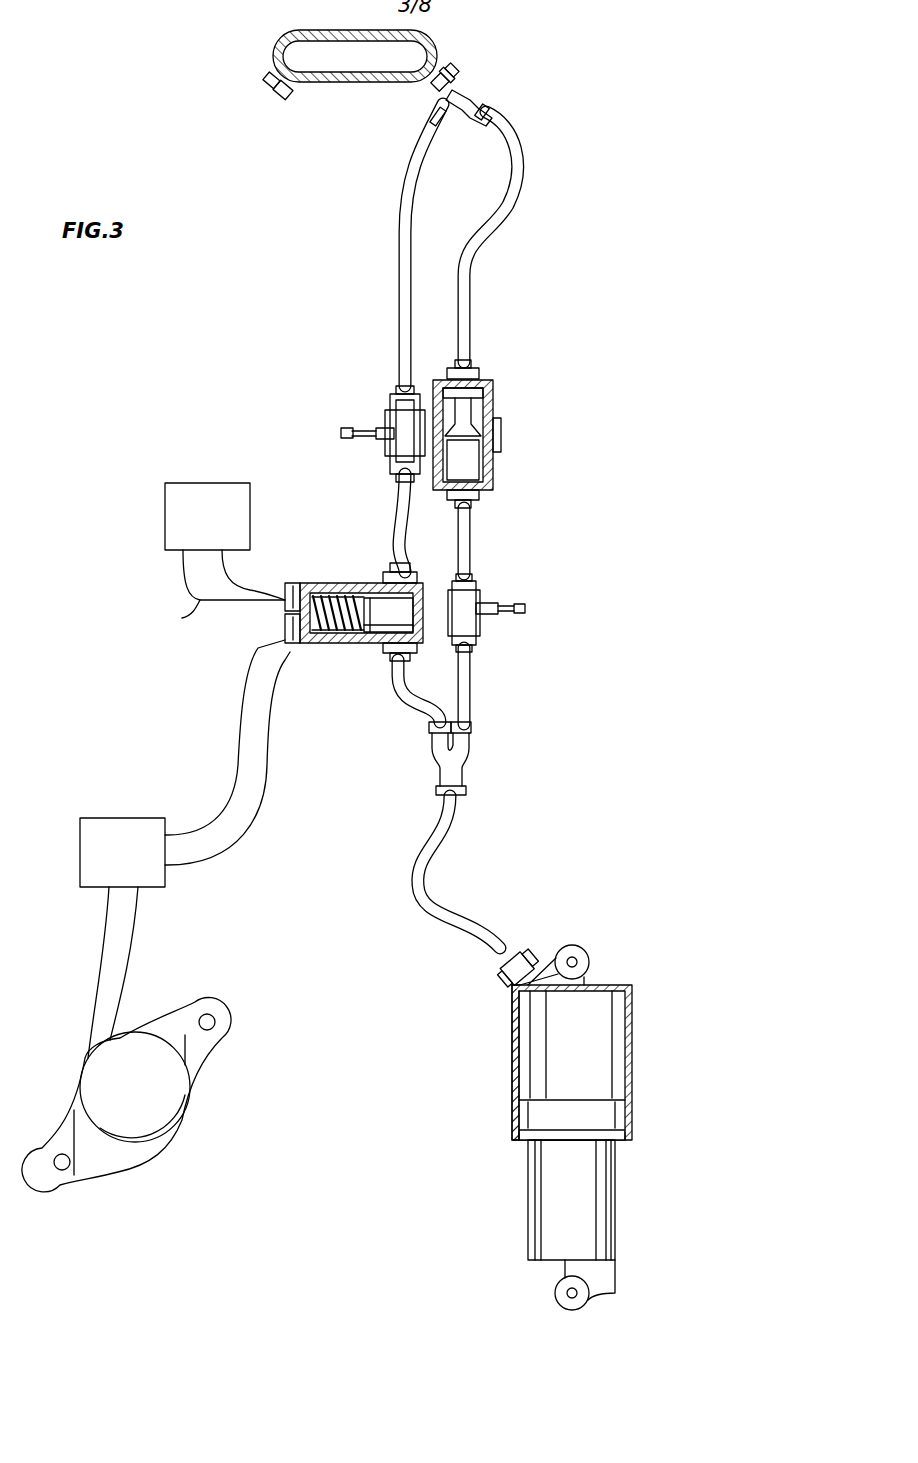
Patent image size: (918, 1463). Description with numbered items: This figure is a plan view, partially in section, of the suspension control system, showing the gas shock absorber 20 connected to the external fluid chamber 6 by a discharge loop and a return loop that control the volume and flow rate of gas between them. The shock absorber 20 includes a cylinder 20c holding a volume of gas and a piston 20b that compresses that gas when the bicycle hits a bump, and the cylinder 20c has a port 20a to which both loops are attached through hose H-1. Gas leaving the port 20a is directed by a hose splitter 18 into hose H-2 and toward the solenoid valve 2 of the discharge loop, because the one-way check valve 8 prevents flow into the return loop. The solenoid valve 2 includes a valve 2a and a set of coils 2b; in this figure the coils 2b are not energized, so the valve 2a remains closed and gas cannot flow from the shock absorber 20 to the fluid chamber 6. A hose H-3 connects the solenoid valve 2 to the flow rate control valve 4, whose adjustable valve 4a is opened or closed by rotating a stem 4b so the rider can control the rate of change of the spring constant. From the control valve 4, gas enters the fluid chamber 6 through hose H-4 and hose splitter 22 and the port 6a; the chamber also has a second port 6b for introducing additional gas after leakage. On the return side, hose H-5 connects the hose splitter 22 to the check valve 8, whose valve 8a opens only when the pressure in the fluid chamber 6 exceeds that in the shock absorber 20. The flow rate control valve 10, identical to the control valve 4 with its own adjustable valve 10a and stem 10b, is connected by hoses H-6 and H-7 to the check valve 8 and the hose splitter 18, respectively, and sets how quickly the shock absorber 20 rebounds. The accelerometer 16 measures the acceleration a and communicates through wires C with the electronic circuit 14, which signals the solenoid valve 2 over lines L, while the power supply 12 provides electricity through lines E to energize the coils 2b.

The solenoid valve 2 is at (295, 583).
The valve 2a is at (380, 605).
The coils 2b is at (345, 645).
The flow rate control valve 4 is at (388, 452).
The adjustable valve 4a is at (393, 424).
The stem 4b is at (339, 434).
The fluid chamber 6 is at (330, 30).
The port 6a is at (444, 76).
The second port 6b is at (288, 90).
The one-way check valve 8 is at (494, 470).
The valve 8a is at (466, 408).
The flow rate control valve 10 is at (478, 584).
The adjustable valve 10a is at (478, 622).
The stem 10b is at (528, 608).
The power supply 12 is at (205, 483).
The electronic circuit 14 is at (125, 818).
The accelerometer 16 is at (165, 1145).
The hose splitter 18 is at (464, 758).
The gas shock absorber 20 is at (632, 1056).
The port 20a is at (527, 955).
The piston 20b is at (615, 1217).
The cylinder 20c is at (514, 1032).
The hose splitter 22 is at (468, 96).
The hose H-1 is at (457, 838).
The hose H-2 is at (415, 698).
The hose H-3 is at (396, 512).
The hose H-4 is at (400, 232).
The hose H-5 is at (526, 178).
The hose H-6 is at (471, 537).
The hose H-7 is at (471, 684).
The lines E is at (182, 618).
The lines L is at (265, 737).
The wires C is at (128, 962).
The acceleration a is at (572, 1316).